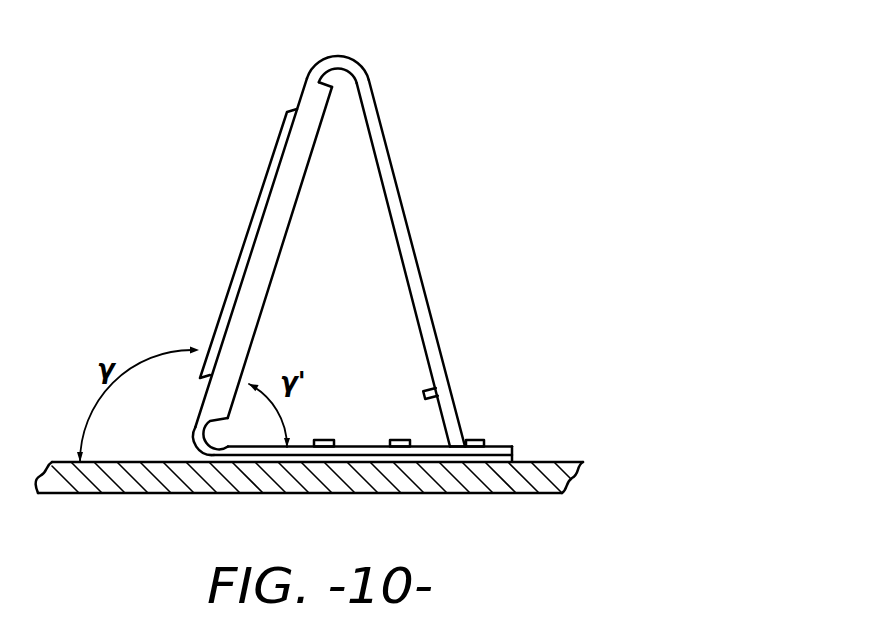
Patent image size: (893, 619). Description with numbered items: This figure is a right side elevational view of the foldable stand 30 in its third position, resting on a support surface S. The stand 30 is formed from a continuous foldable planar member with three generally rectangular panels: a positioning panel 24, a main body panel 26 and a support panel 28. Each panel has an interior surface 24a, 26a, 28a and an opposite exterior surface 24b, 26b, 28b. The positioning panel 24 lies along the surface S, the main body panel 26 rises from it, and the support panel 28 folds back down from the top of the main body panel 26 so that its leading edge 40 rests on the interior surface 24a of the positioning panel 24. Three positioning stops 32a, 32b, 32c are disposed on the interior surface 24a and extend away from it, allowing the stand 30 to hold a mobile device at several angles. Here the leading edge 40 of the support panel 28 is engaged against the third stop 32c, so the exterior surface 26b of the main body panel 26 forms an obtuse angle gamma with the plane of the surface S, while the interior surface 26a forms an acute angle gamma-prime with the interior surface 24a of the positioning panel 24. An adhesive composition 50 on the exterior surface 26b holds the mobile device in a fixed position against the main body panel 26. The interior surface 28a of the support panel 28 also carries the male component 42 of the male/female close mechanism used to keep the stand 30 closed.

The foldable stand 30 is at (502, 111).
The positioning panel 24 is at (508, 454).
The interior surface of positioning panel 24a is at (353, 446).
The exterior surface of positioning panel 24b is at (345, 456).
The main body panel 26 is at (282, 177).
The interior surface of main body panel 26a is at (266, 298).
The exterior surface of main body panel 26b is at (302, 95).
The support panel 28 is at (412, 282).
The interior surface of support panel 28a is at (359, 101).
The exterior surface of support panel 28b is at (403, 207).
The first positioning stop 32a is at (321, 438).
The second positioning stop 32b is at (393, 438).
The third positioning stop 32c is at (469, 438).
The leading edge of support panel 40 is at (449, 446).
The male component of fastener 42 is at (437, 392).
The adhesive composition 50 is at (250, 243).
The support surface S is at (138, 458).